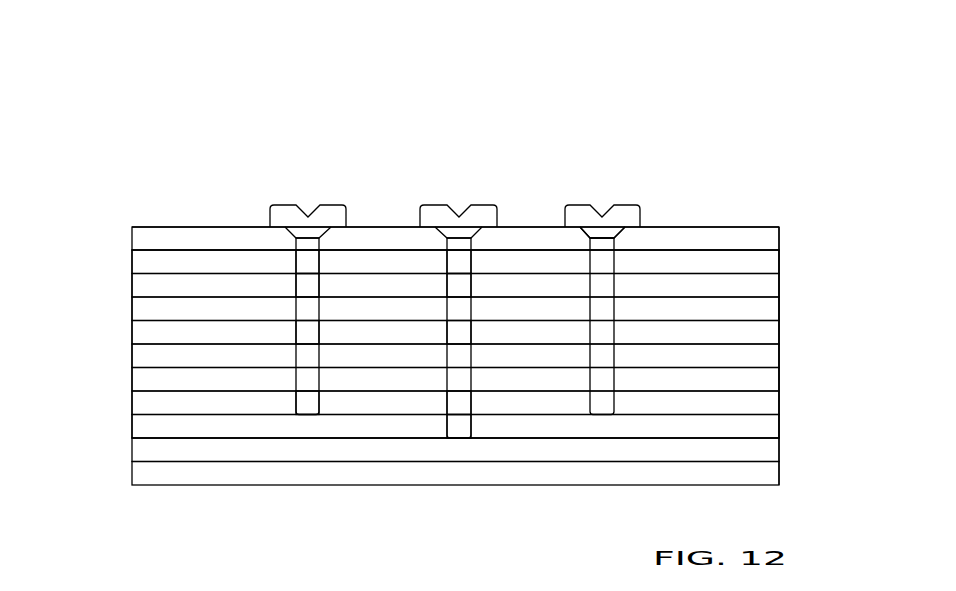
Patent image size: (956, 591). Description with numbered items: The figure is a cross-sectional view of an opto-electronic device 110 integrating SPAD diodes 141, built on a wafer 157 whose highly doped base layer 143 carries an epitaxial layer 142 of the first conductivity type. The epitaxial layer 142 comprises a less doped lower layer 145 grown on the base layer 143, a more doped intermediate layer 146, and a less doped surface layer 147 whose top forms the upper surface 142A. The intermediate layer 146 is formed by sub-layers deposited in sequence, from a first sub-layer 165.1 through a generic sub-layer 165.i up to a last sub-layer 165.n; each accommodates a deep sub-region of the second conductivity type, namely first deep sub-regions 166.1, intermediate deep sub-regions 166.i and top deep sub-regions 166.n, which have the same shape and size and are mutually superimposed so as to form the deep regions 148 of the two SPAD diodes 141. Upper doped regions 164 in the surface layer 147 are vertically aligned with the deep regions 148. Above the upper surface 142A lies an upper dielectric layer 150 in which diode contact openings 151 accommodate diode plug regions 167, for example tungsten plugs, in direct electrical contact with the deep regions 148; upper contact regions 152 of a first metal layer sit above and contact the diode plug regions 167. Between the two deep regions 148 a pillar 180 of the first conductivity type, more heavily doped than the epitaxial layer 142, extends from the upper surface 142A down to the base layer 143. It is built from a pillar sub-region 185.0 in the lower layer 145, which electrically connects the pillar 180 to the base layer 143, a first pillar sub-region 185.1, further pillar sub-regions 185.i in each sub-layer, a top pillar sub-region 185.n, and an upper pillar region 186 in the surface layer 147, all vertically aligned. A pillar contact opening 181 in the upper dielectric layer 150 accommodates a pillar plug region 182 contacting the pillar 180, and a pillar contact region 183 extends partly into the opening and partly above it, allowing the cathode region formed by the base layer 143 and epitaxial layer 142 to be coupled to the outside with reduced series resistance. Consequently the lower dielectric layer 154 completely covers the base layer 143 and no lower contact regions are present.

The opto-electronic device 110 is at (155, 115).
The SPAD diodes 141 is at (303, 173).
The epitaxial layer 142 is at (793, 250).
The upper surface 142A is at (173, 245).
The base layer 143 is at (140, 451).
The lower layer 145 is at (140, 428).
The intermediate layer 146 is at (715, 313).
The surface layer 147 is at (140, 262).
The deep regions 148 is at (307, 357).
The upper dielectric layer 150 is at (199, 236).
The diode contact openings 151 is at (602, 235).
The upper contact regions 152 is at (280, 200).
The lower dielectric layer 154 is at (320, 475).
The wafer 157 is at (785, 452).
The upper doped regions 164 is at (305, 263).
The n-th sub-layer 165.n is at (140, 286).
The i-th sub-layer 165.i is at (140, 332).
The first sub-layer 165.1 is at (140, 404).
The n-th deep sub-region 166.n is at (305, 285).
The i-th deep sub-region 166.i is at (305, 330).
The first deep sub-regions 166.1 is at (305, 404).
The diode plug regions 167 is at (346, 222).
The pillar 180 is at (483, 375).
The pillar contact opening 181 is at (463, 232).
The pillar plug region 182 is at (453, 235).
The pillar contact region 183 is at (430, 207).
The n-th pillar sub-region 185.n is at (463, 288).
The pillar sub-regions 185.i is at (458, 332).
The first pillar sub-region 185.1 is at (458, 404).
The pillar sub-region in lower layer 185.0 is at (463, 430).
The upper pillar region 186 is at (458, 263).